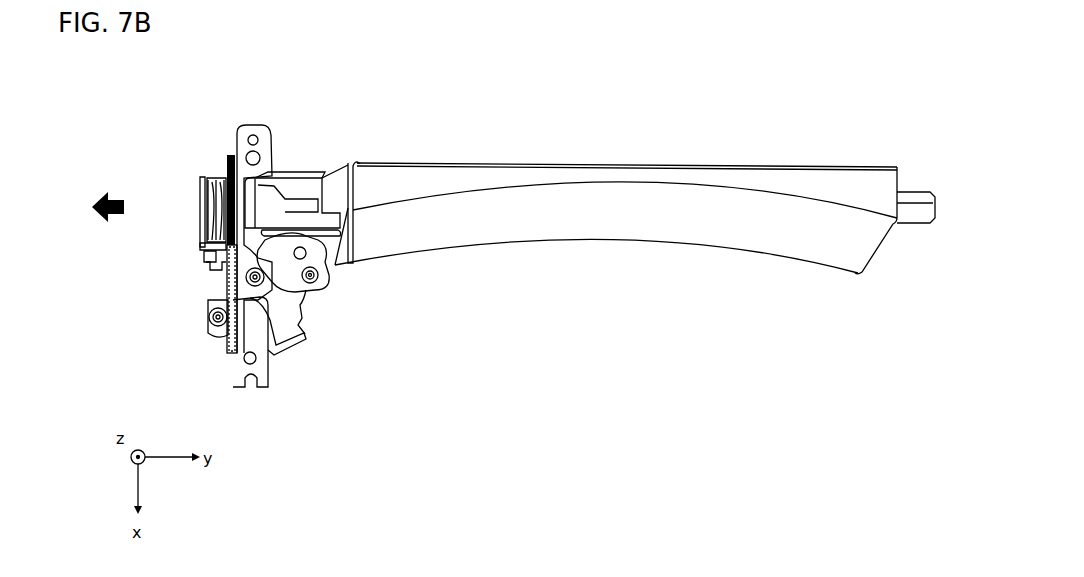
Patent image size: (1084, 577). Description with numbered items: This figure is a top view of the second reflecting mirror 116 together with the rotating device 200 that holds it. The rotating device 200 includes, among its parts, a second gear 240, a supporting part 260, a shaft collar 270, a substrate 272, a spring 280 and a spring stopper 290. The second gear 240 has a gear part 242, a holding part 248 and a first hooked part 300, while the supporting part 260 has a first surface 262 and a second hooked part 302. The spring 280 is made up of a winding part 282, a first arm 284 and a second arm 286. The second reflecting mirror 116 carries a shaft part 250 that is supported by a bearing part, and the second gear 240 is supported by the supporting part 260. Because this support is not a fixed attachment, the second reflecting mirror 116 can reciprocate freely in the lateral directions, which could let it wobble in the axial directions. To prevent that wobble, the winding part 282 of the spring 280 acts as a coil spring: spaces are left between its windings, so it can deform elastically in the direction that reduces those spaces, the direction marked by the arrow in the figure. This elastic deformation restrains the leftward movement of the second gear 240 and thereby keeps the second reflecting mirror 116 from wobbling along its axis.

The second reflecting mirror 116 is at (680, 175).
The rotating device 200 is at (247, 110).
The second gear 240 is at (272, 196).
The gear part 242 is at (315, 285).
The holding part 248 is at (302, 210).
The shaft part 250 is at (912, 192).
The supporting part 260 is at (292, 348).
The first surface 262 is at (215, 367).
The shaft collar 270 is at (228, 155).
The substrate 272 is at (227, 285).
The spring 280 is at (206, 180).
The winding part 282 is at (209, 176).
The first arm 284 is at (208, 266).
The second arm 286 is at (204, 254).
The spring stopper 290 is at (201, 205).
The first hooked part 300 is at (215, 300).
The second hooked part 302 is at (200, 246).